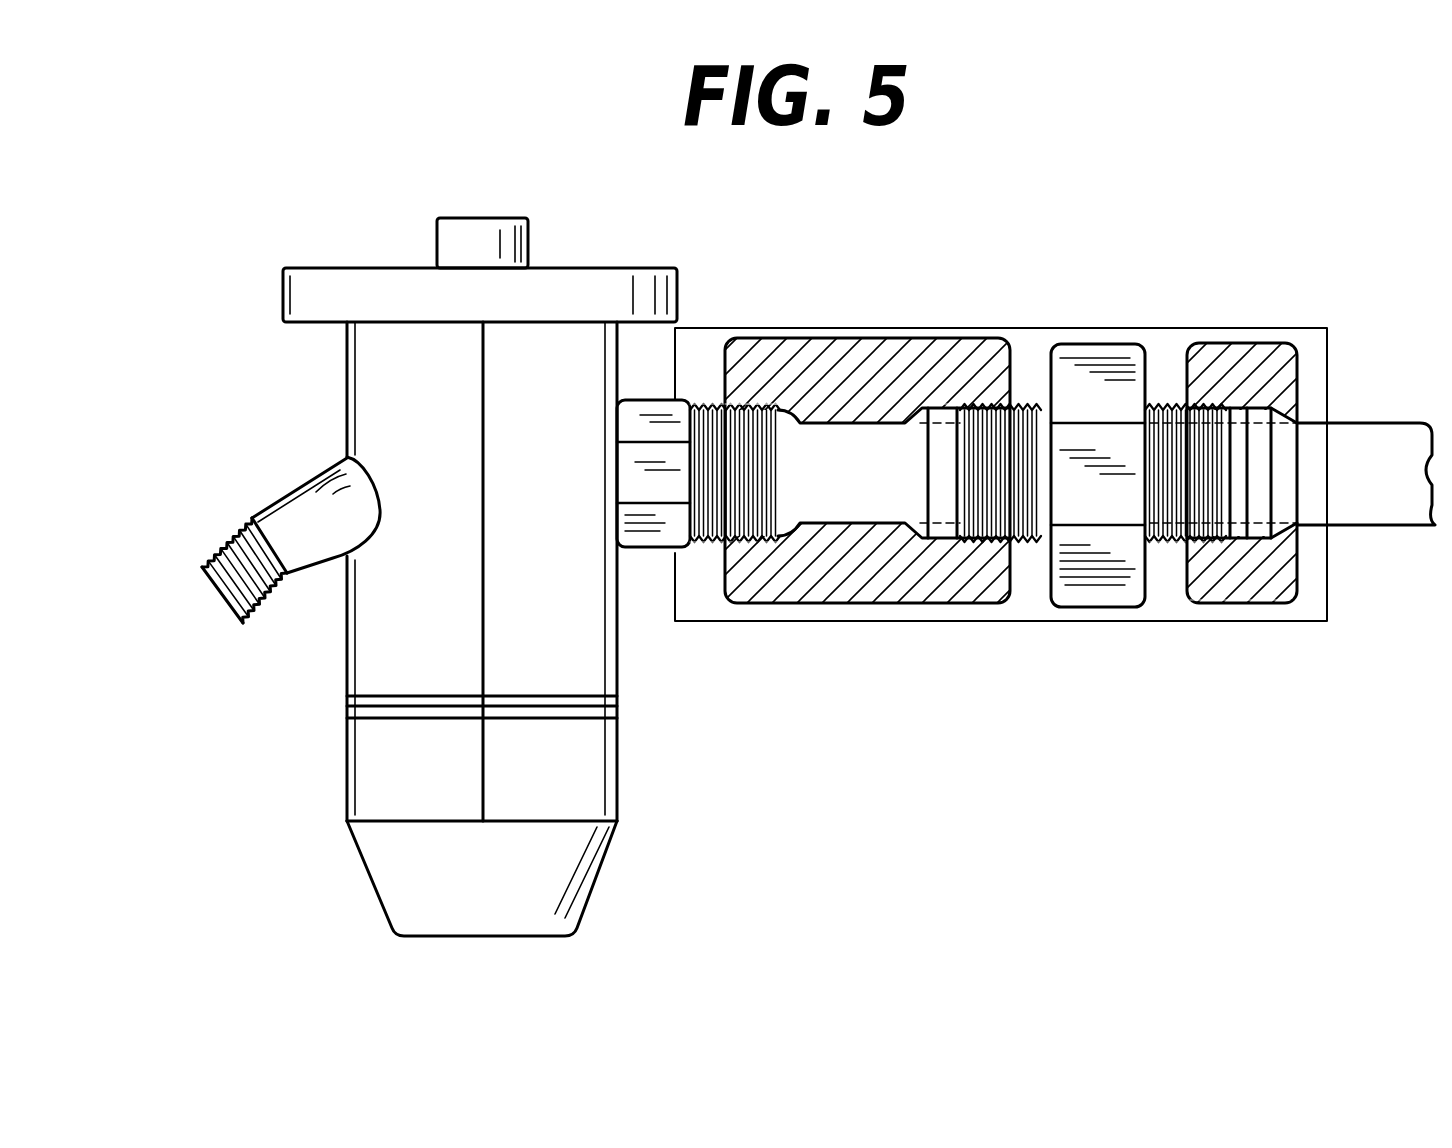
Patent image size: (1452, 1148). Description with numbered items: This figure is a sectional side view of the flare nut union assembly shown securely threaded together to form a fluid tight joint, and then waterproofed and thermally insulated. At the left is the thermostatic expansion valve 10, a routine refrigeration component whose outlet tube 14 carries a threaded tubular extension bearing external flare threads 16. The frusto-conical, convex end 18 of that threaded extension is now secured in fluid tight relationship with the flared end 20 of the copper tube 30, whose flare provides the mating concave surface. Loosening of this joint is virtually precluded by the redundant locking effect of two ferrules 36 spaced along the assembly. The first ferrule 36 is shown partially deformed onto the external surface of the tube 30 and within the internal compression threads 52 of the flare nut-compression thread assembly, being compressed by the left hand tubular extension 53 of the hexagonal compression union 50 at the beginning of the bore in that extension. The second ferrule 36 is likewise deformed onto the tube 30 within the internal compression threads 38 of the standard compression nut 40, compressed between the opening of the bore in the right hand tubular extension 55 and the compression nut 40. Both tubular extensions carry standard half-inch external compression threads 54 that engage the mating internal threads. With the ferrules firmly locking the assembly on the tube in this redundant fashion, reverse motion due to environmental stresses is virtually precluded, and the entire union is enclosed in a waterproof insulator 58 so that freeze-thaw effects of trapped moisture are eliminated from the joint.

The thermostatic expansion valve 10 is at (328, 265).
The outlet tube 14 is at (638, 560).
The external flare threads 16 is at (735, 548).
The end portion of the threaded tubular extension 18 is at (776, 552).
The flared end of the copper tube 20 is at (784, 398).
The copper tube 30 is at (1362, 418).
The ferrule 36 is at (940, 398).
The internal compression threads of the compression nut 38 is at (1210, 547).
The compression nut 40 is at (1240, 335).
The compression union 50 is at (1100, 612).
The internal compression threads 52 is at (967, 550).
The left hand tubular extension 53 is at (1008, 545).
The external compression threads 54 is at (1003, 395).
The right hand tubular extension 55 is at (1163, 548).
The waterproof insulator 58 is at (728, 333).